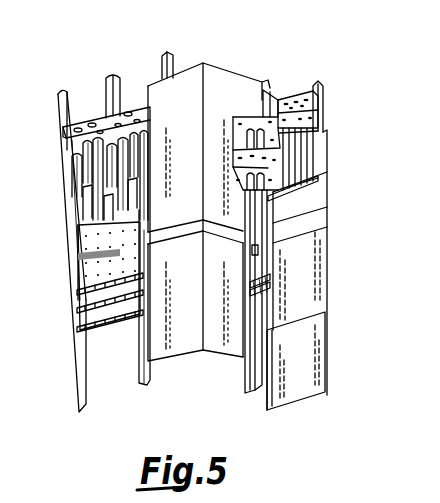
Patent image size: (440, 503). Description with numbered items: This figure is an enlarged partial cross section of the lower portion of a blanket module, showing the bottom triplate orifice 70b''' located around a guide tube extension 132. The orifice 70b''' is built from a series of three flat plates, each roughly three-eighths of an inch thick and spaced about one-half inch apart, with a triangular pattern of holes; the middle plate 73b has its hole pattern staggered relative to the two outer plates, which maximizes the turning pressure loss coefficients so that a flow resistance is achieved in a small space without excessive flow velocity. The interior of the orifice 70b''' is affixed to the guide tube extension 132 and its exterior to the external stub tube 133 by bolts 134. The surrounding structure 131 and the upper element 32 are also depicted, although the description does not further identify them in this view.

The central body / housing upper section 131 is at (233, 87).
The guide tube extension 132 is at (217, 340).
The external stub tube 133 is at (295, 303).
The bolts 134 is at (79, 251).
The terminal plate with pins 32 is at (91, 122).
The middle plate 73b is at (80, 293).
The Type 3 bottom orifice 70b''' is at (325, 292).